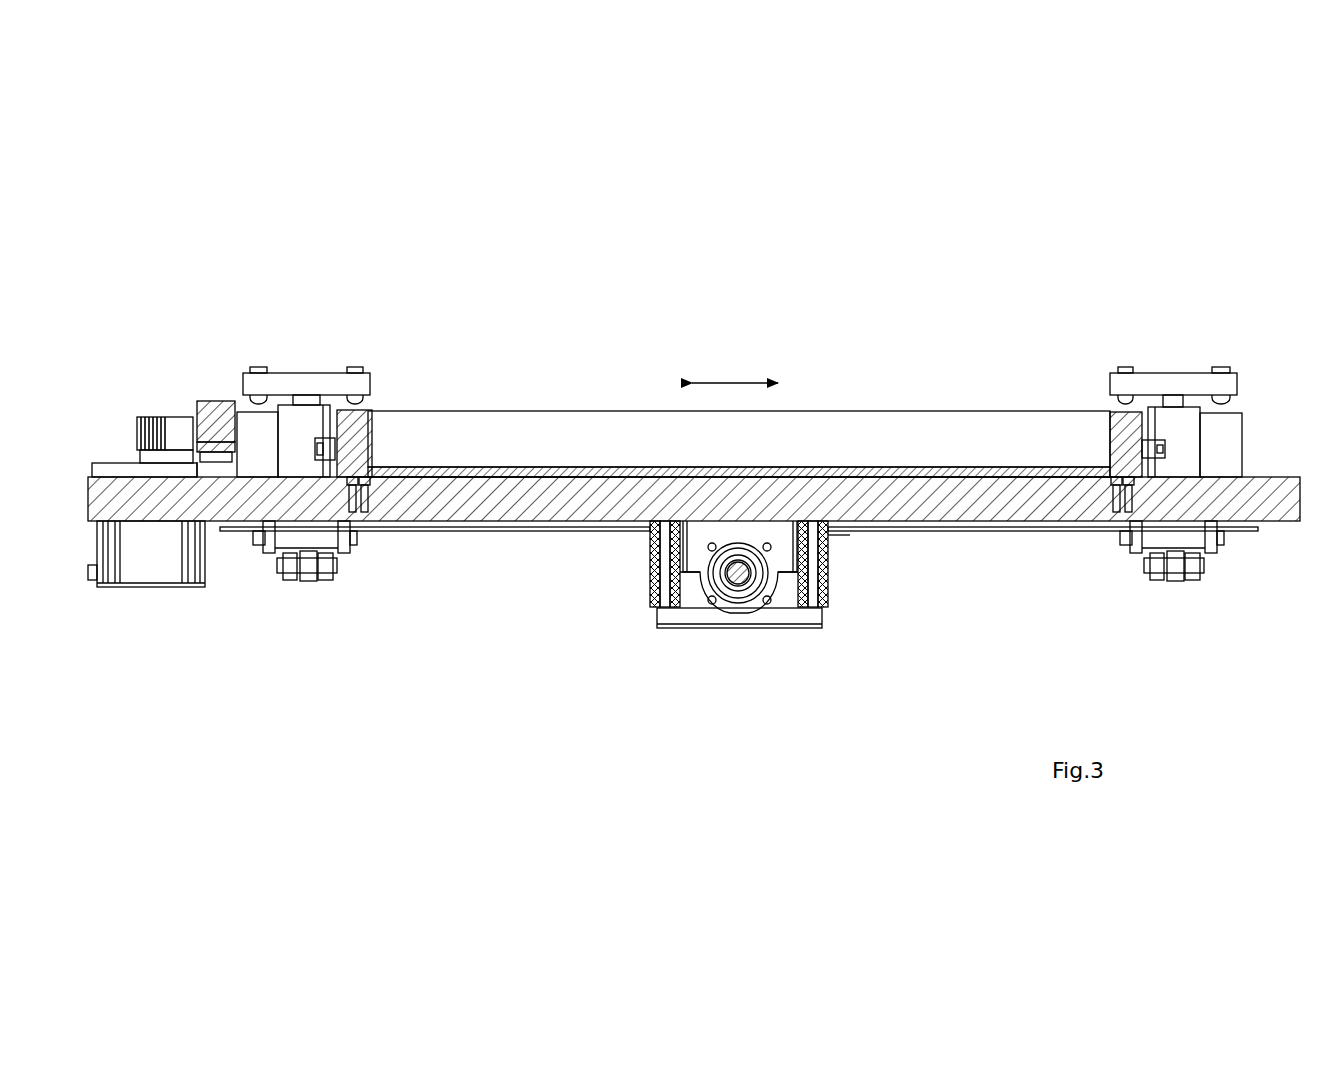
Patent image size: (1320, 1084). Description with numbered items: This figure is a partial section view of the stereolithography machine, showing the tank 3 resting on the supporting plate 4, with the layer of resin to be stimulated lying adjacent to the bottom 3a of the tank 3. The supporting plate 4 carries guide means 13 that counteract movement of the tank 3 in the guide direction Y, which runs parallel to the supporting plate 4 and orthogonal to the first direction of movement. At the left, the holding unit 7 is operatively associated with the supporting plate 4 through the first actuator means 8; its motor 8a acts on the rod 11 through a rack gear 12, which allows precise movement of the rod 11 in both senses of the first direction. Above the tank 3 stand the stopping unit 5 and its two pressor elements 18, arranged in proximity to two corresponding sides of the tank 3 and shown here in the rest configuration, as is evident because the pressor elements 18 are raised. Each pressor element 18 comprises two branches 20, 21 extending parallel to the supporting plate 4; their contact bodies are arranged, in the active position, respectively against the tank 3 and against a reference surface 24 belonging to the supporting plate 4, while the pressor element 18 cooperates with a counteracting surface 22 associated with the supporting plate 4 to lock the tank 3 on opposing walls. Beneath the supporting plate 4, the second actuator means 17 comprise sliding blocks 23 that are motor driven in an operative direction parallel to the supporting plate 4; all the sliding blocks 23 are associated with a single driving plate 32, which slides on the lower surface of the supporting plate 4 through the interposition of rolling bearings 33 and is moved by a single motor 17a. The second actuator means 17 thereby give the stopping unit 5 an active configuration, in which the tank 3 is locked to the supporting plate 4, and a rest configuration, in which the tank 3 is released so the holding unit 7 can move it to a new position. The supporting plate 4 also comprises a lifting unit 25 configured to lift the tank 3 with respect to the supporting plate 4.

The tank 3 is at (456, 406).
The bottom of the tank 3a is at (527, 464).
The supporting plate 4 is at (589, 492).
The stopping unit 5 is at (307, 347).
The holding unit 7 is at (198, 370).
The first actuator means 8 is at (198, 603).
The motor 8a is at (143, 565).
The rod 11 is at (218, 405).
The rack gear 12 is at (160, 405).
The guide means 13 is at (352, 445).
The second actuator means 17 is at (718, 640).
The motor 17a is at (757, 605).
The pressor element 18 is at (336, 365).
The branch 20 is at (261, 360).
The branch 21 is at (366, 357).
The counteracting surface 22 is at (443, 480).
The sliding block 23 is at (310, 590).
The reference surface 24 is at (1238, 410).
The lifting unit 25 is at (1105, 512).
The driving plate 32 is at (325, 572).
The rolling bearings 33 is at (347, 552).
The guide direction Y is at (735, 383).